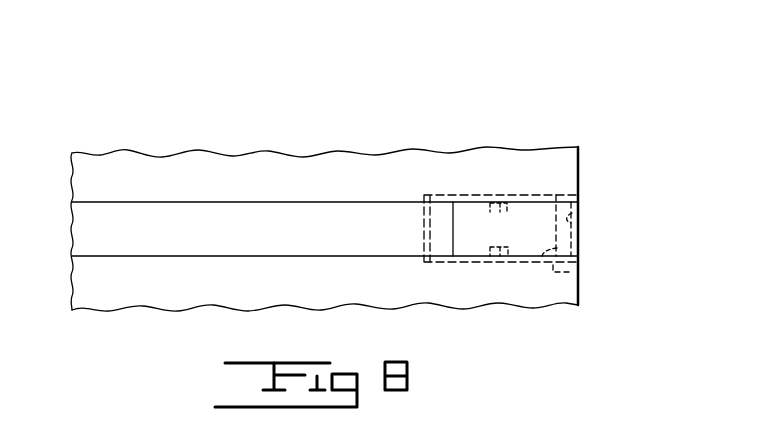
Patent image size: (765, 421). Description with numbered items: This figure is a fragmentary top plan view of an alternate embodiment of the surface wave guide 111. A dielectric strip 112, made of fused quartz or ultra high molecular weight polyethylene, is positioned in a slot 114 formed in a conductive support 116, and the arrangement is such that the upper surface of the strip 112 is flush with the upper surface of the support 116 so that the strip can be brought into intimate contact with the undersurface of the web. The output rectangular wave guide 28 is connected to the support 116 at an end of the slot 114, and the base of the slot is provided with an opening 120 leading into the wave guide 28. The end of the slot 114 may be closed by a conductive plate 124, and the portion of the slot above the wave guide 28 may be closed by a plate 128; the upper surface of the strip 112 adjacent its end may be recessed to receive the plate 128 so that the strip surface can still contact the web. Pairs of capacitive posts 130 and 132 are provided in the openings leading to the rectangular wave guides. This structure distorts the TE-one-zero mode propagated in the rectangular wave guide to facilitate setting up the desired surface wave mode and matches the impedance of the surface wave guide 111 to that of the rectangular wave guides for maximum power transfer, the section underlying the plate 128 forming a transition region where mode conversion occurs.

The surface wave guide 111 is at (453, 75).
The dielectric strip 112 is at (256, 219).
The slot 114 is at (338, 212).
The conductive support 116 is at (440, 155).
The capacitive posts 130 is at (512, 197).
The capacitive posts 132 is at (512, 257).
The plate 128 is at (537, 211).
The conductive plate 124 is at (582, 217).
The opening 120 is at (573, 246).
The output rectangular wave guide 28 is at (582, 272).